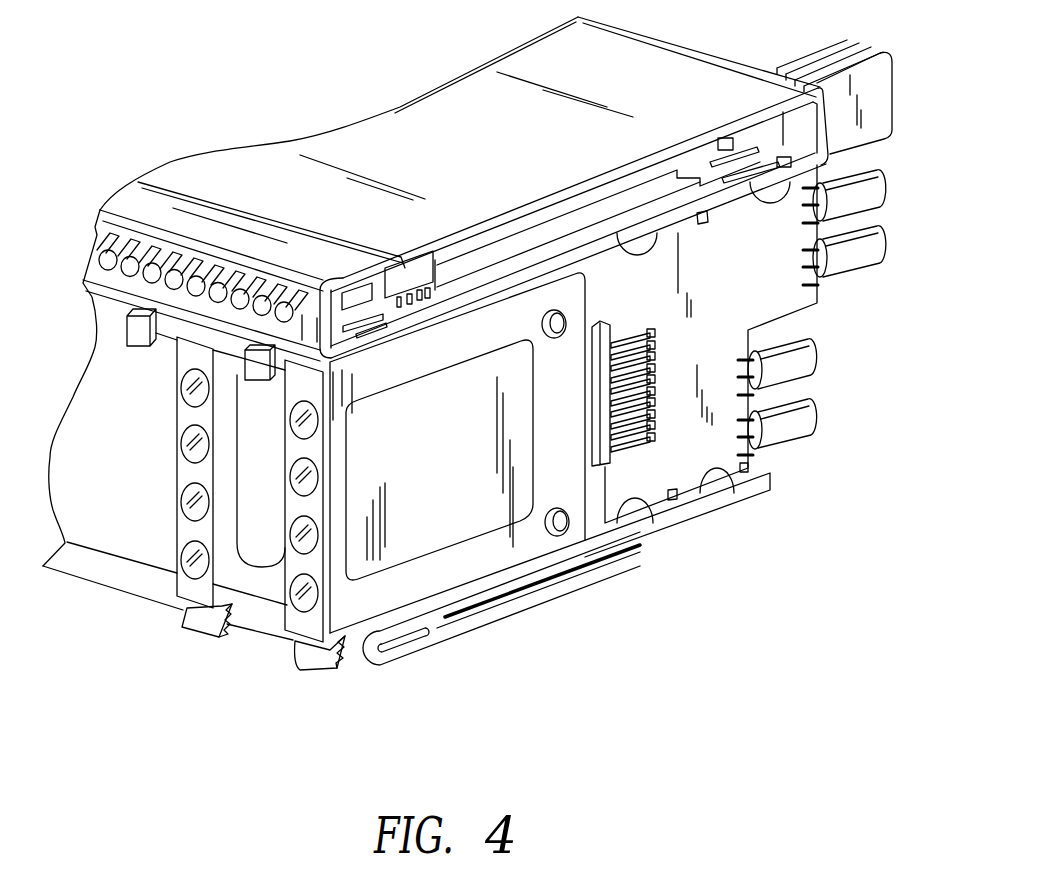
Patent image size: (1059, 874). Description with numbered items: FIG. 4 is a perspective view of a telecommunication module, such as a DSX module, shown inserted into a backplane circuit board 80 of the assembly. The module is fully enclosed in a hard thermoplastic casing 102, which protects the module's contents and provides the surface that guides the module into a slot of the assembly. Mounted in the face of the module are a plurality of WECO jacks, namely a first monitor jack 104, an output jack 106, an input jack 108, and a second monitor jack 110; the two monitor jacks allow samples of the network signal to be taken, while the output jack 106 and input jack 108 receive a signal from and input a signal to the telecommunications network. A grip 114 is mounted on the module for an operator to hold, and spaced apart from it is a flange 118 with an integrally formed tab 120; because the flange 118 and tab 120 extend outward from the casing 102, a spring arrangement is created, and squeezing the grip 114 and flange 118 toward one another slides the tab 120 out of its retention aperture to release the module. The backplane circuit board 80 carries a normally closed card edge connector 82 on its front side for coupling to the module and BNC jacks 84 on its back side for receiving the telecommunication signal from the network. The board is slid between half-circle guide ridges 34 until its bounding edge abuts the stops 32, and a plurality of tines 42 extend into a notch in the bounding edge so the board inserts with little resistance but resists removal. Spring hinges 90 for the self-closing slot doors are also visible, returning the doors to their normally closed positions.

The stops 32 is at (750, 466).
The guide ridges 34 is at (790, 204).
The tines 42 is at (703, 222).
The backplane circuit board 80 is at (687, 347).
The card edge connector 82 is at (608, 323).
The BNC jacks 84 is at (878, 232).
The spring hinges 90 is at (362, 334).
The casing 102 is at (421, 458).
The first monitor jack 104 is at (296, 426).
The output jack 106 is at (295, 481).
The input jack 108 is at (295, 540).
The second monitor jack 110 is at (295, 590).
The grip 114 is at (329, 668).
The flange 118 is at (258, 375).
The tab 120 is at (374, 330).